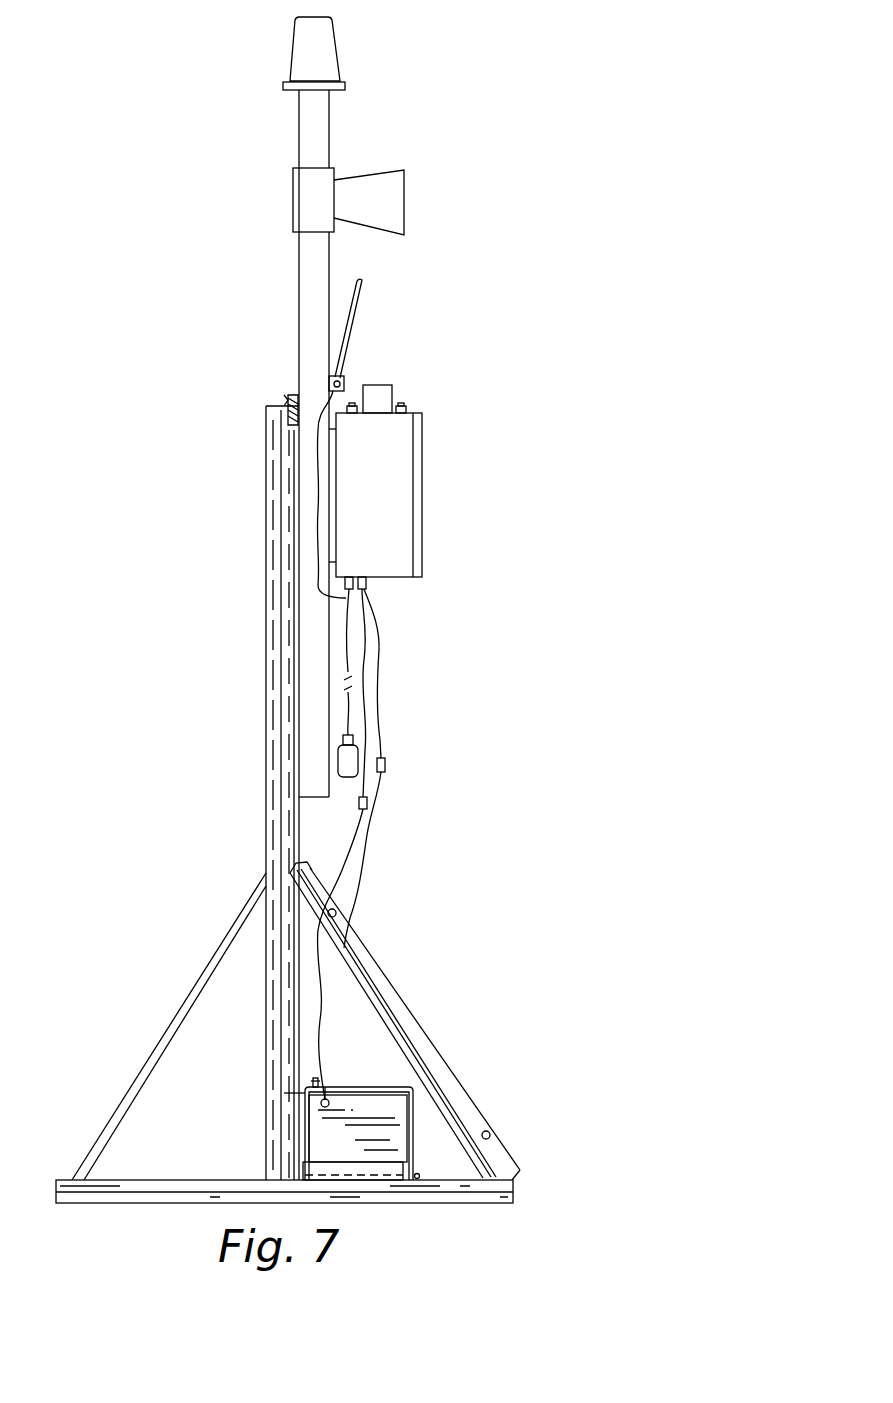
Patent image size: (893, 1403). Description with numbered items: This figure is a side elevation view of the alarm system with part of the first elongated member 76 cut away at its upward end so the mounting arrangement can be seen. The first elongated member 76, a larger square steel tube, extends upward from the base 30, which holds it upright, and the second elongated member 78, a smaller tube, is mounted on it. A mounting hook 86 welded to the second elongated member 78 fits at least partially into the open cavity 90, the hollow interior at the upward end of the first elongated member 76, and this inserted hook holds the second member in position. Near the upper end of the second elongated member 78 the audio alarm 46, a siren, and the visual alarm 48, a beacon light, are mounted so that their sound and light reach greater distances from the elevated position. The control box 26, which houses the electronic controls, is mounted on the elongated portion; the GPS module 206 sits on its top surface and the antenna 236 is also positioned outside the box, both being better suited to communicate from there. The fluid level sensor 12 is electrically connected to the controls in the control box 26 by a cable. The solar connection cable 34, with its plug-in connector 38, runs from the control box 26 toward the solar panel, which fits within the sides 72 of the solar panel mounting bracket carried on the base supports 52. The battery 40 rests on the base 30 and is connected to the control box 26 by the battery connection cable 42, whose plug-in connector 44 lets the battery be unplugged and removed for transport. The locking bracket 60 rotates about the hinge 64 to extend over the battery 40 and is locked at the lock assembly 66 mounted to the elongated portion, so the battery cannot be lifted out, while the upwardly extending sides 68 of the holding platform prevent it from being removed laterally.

The fluid level sensor 12 is at (358, 752).
The control box 26 is at (392, 504).
The base 30 is at (467, 1200).
The solar connection cable 34 is at (367, 853).
The plug-in connector 38 is at (386, 765).
The battery 40 is at (345, 1154).
The battery connection cable 42 is at (326, 978).
The plug-in connector 44 is at (359, 801).
The audio alarm 46 is at (405, 191).
The visual alarm 48 is at (333, 32).
The base support 52 is at (195, 984).
The locking bracket 60 is at (350, 1086).
The hinge 64 is at (419, 1174).
The lock assembly 66 is at (312, 1075).
The sides 68 is at (355, 1170).
The sides 72 is at (410, 1012).
The first elongated member 76 is at (276, 617).
The second elongated member 78 is at (299, 284).
The mounting hook 86 is at (288, 405).
The open cavity 90 is at (262, 394).
The GPS module 206 is at (378, 385).
The antenna 236 is at (358, 318).